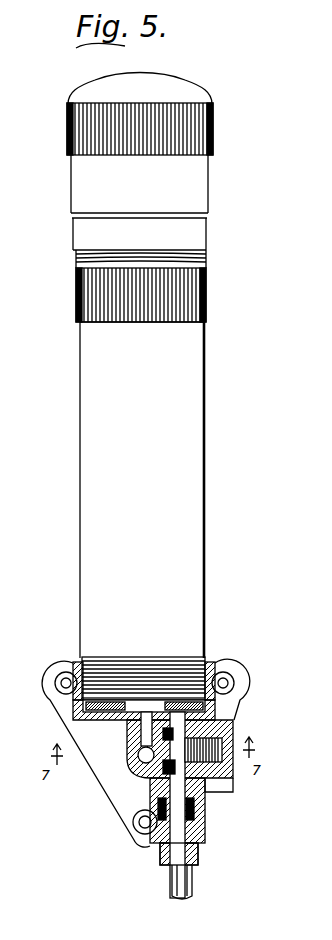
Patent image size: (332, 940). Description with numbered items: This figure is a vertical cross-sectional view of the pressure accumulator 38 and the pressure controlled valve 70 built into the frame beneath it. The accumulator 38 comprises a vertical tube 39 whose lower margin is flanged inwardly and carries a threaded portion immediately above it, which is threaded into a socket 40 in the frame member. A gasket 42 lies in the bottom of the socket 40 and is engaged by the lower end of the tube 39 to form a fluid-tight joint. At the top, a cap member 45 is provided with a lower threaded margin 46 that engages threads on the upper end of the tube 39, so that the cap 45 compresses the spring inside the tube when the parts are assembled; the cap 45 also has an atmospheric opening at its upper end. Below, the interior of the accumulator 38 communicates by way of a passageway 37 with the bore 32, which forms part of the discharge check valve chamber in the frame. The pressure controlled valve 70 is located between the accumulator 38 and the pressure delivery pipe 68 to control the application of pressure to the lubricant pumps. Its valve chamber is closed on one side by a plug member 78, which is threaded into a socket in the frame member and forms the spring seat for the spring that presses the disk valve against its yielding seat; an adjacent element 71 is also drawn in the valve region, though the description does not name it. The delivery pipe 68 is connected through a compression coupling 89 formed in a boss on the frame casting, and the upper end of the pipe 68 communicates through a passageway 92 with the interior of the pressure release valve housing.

The cap member 45 is at (212, 92).
The lower threaded margin 46 is at (206, 236).
The pressure accumulator 38 is at (72, 470).
The vertical tube 39 is at (182, 427).
The socket 40 is at (217, 664).
The gasket 42 is at (217, 712).
The pressure controlled valve 70 is at (250, 728).
The passageway 37 is at (123, 730).
The bore 32 is at (130, 763).
The valve seat 71 is at (152, 768).
The plug member 78 is at (234, 778).
The passageway 92 is at (207, 790).
The compression coupling 89 is at (200, 838).
The pressure delivery pipe 68 is at (192, 893).